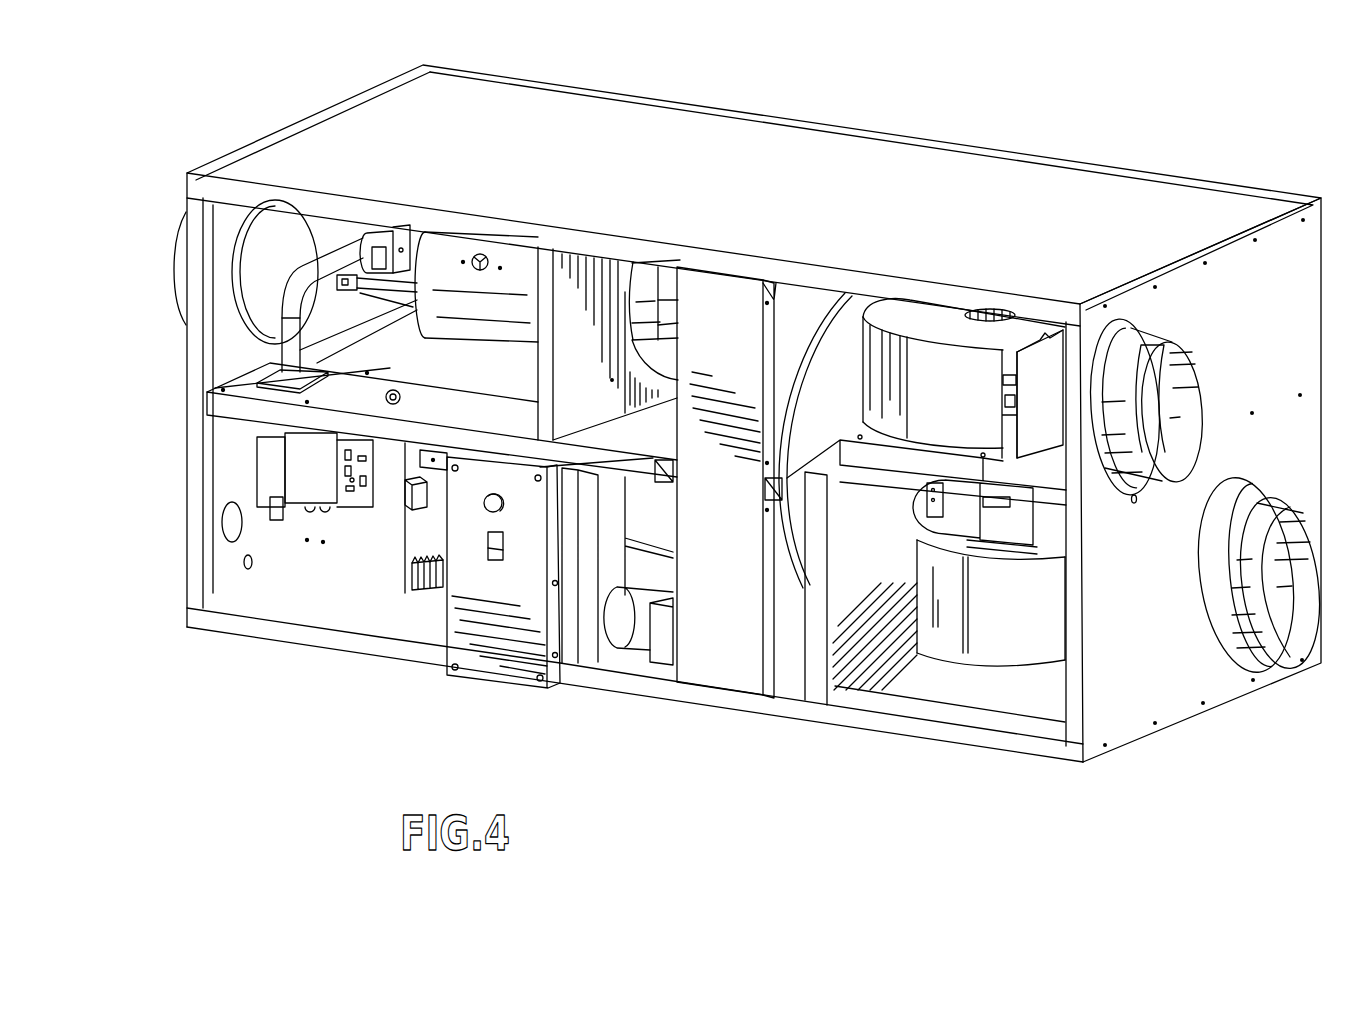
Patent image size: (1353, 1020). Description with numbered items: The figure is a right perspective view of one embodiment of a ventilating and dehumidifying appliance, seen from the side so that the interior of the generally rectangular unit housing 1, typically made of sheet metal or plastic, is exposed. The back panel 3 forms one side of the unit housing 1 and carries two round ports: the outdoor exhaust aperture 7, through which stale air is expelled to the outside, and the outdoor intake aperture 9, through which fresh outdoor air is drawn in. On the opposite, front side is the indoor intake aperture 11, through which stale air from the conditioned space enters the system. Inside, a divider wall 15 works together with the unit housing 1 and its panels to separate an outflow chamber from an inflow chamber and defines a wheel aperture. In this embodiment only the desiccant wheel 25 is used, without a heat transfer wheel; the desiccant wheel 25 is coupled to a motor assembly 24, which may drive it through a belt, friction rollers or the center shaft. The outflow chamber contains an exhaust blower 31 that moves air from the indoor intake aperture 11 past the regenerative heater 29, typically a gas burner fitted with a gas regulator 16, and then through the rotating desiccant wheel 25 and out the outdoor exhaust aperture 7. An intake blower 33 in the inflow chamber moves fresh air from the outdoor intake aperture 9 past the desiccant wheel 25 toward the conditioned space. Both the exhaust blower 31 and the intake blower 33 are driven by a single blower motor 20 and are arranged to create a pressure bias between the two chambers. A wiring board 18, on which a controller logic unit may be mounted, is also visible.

The unit housing 1 is at (817, 163).
The back panel 3 is at (1290, 260).
The outdoor exhaust aperture 7 is at (1150, 403).
The outdoor intake aperture 9 is at (1288, 650).
The indoor intake aperture 11 is at (242, 250).
The divider wall 15 is at (441, 440).
The gas regulator 16 is at (278, 495).
The wiring board 18 is at (417, 547).
The blower motor 20 is at (998, 523).
The motor assembly 24 is at (635, 630).
The desiccant wheel 25 is at (841, 331).
The regenerative heater 29 is at (394, 242).
The exhaust blower 31 is at (963, 370).
The intake blower 33 is at (1005, 633).